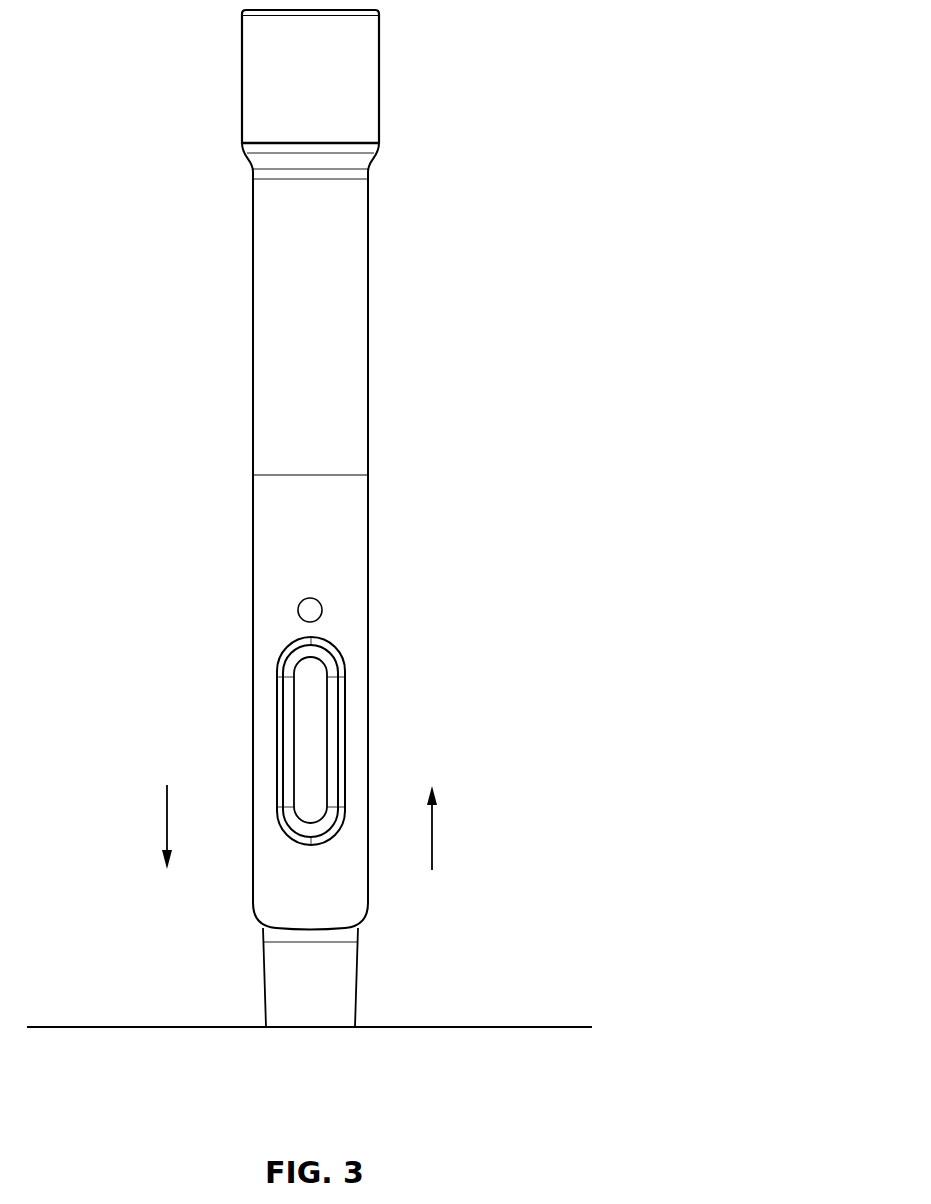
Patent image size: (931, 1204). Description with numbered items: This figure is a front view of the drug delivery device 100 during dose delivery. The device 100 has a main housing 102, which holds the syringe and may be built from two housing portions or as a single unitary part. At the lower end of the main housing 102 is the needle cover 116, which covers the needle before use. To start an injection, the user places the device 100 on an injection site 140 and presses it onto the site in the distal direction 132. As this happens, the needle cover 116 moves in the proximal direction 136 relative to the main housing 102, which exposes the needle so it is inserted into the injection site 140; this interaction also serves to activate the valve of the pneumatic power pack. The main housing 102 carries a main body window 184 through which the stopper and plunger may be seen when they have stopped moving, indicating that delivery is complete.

The drug delivery device 100 is at (192, 321).
The main housing 102 is at (179, 535).
The main body window 184 is at (273, 710).
The distal direction 132 is at (166, 829).
The proximal direction 136 is at (433, 832).
The needle cover 116 is at (287, 998).
The injection site 140 is at (310, 1028).